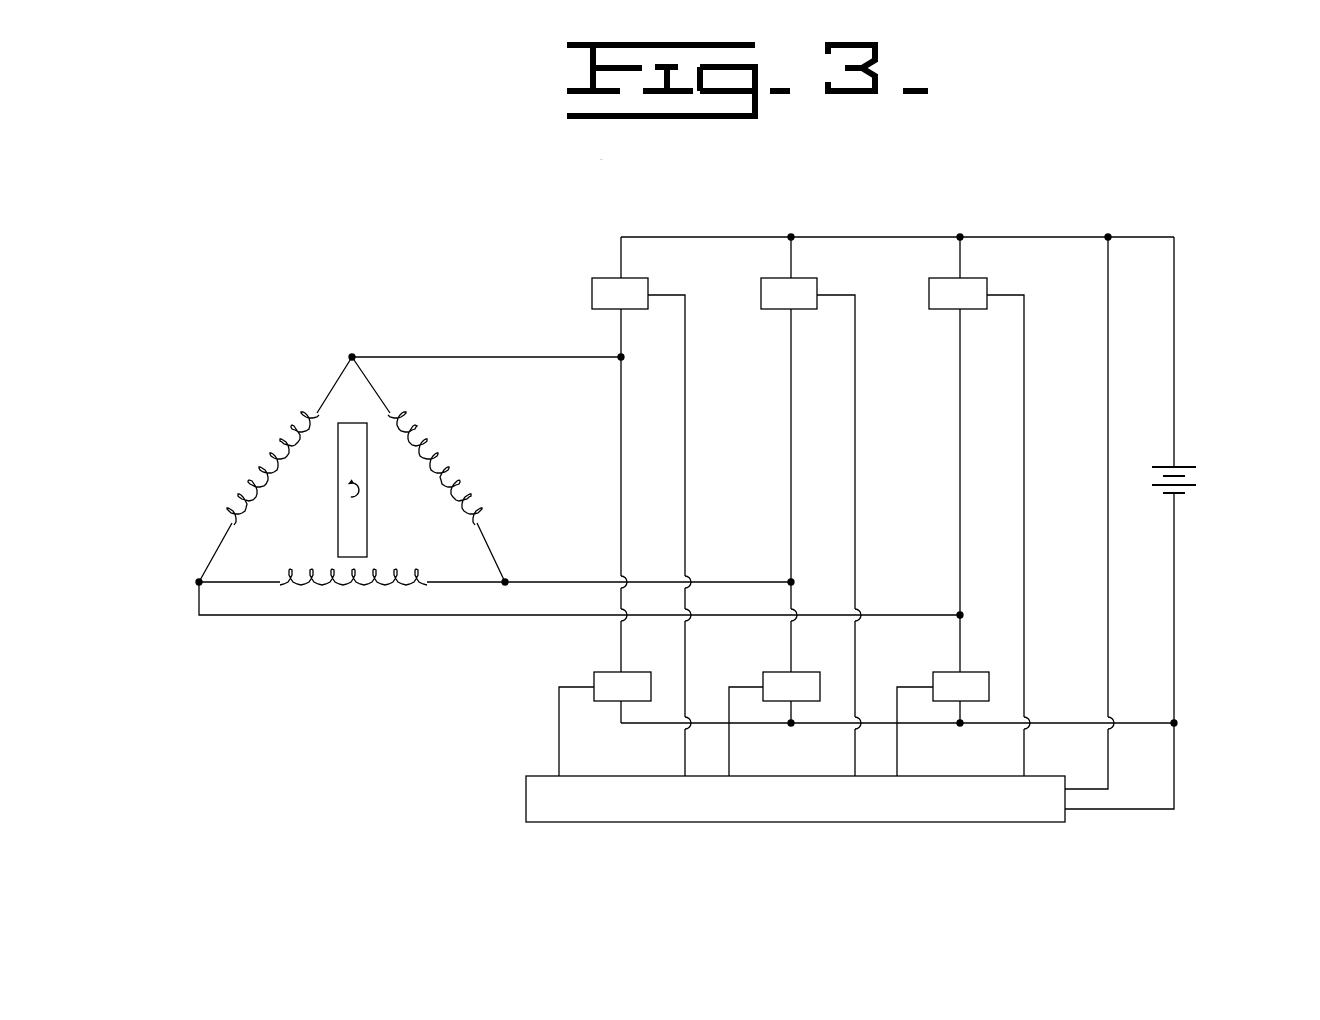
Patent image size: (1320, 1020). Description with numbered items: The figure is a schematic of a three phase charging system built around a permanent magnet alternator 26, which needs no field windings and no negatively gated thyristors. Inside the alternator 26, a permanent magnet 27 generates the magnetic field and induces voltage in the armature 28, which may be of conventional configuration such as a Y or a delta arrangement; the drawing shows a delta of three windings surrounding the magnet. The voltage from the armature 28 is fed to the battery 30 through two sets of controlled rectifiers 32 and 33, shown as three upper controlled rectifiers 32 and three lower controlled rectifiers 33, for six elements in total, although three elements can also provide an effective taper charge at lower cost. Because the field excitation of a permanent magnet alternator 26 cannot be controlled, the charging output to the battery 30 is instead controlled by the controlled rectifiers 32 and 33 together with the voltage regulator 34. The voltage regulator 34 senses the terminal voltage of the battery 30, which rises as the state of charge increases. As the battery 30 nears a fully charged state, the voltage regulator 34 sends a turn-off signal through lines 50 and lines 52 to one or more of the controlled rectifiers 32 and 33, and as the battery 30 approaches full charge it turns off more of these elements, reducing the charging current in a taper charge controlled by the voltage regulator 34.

The alternator 26 is at (247, 310).
The permanent magnet 27 is at (380, 508).
The armature 28 is at (455, 460).
The battery 30 is at (1190, 455).
The controlled rectifiers 32 is at (592, 295).
The controlled rectifiers 33 is at (594, 675).
The voltage regulator 34 is at (546, 823).
The lines 50 is at (685, 407).
The lines 52 is at (559, 717).